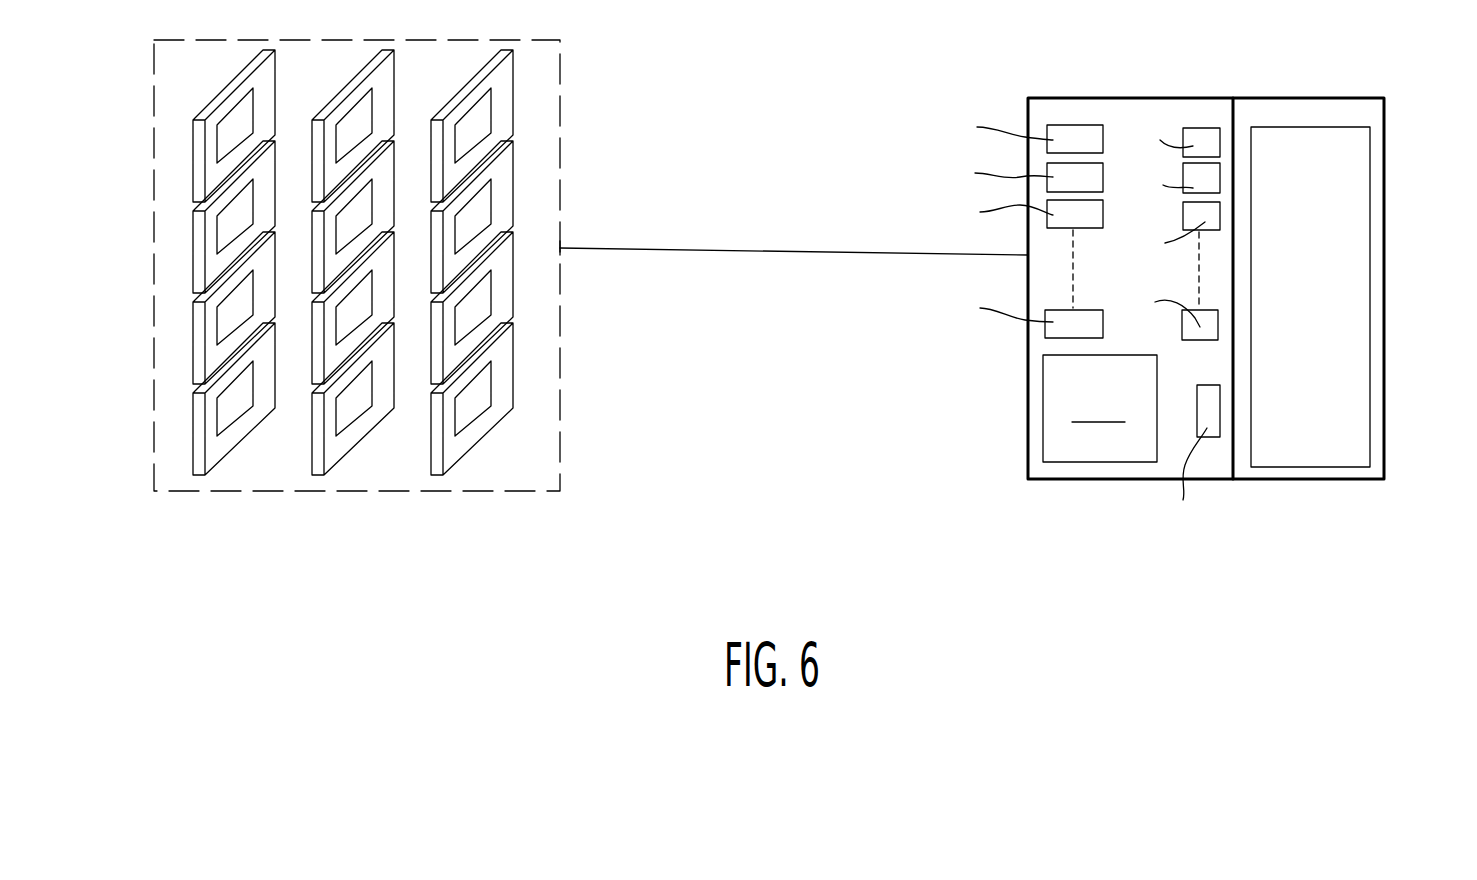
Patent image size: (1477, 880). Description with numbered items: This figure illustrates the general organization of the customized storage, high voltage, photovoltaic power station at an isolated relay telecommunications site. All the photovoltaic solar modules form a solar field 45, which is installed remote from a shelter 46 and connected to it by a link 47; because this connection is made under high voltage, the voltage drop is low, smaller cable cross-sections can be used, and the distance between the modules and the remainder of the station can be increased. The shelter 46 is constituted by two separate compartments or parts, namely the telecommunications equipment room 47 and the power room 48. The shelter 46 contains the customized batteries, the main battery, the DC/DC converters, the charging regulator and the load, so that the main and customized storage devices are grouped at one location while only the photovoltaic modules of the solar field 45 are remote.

The solar field 45 is at (332, 491).
The shelter 46 is at (1333, 482).
The link 47 is at (713, 248).
The power room 48 is at (1100, 110).